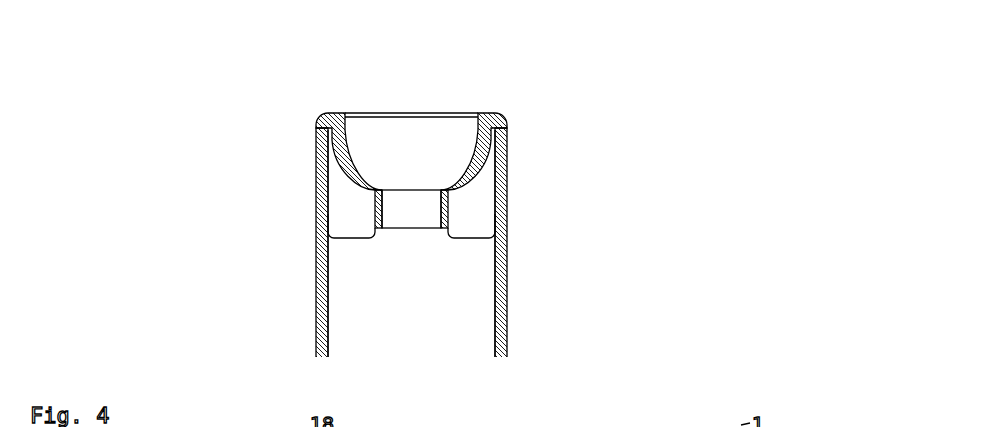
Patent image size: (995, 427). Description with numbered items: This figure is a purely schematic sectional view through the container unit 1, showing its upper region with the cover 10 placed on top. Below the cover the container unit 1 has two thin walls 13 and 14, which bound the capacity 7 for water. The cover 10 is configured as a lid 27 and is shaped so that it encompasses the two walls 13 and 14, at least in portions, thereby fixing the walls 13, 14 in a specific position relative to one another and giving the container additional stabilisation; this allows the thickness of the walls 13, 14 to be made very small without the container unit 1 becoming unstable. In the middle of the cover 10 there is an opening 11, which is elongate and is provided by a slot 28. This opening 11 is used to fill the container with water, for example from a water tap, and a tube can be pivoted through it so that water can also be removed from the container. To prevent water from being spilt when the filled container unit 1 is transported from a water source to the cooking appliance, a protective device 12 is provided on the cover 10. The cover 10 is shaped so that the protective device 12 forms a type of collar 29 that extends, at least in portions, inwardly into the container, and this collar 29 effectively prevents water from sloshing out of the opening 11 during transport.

The container unit 1 is at (469, 202).
The capacity 7 is at (355, 278).
The cover 10 is at (393, 133).
The opening 11 is at (407, 205).
The protective device 12 is at (372, 203).
The wall 13 is at (315, 235).
The wall 14 is at (505, 320).
The lid 27 is at (362, 135).
The slot 28 is at (427, 205).
The collar 29 is at (447, 202).